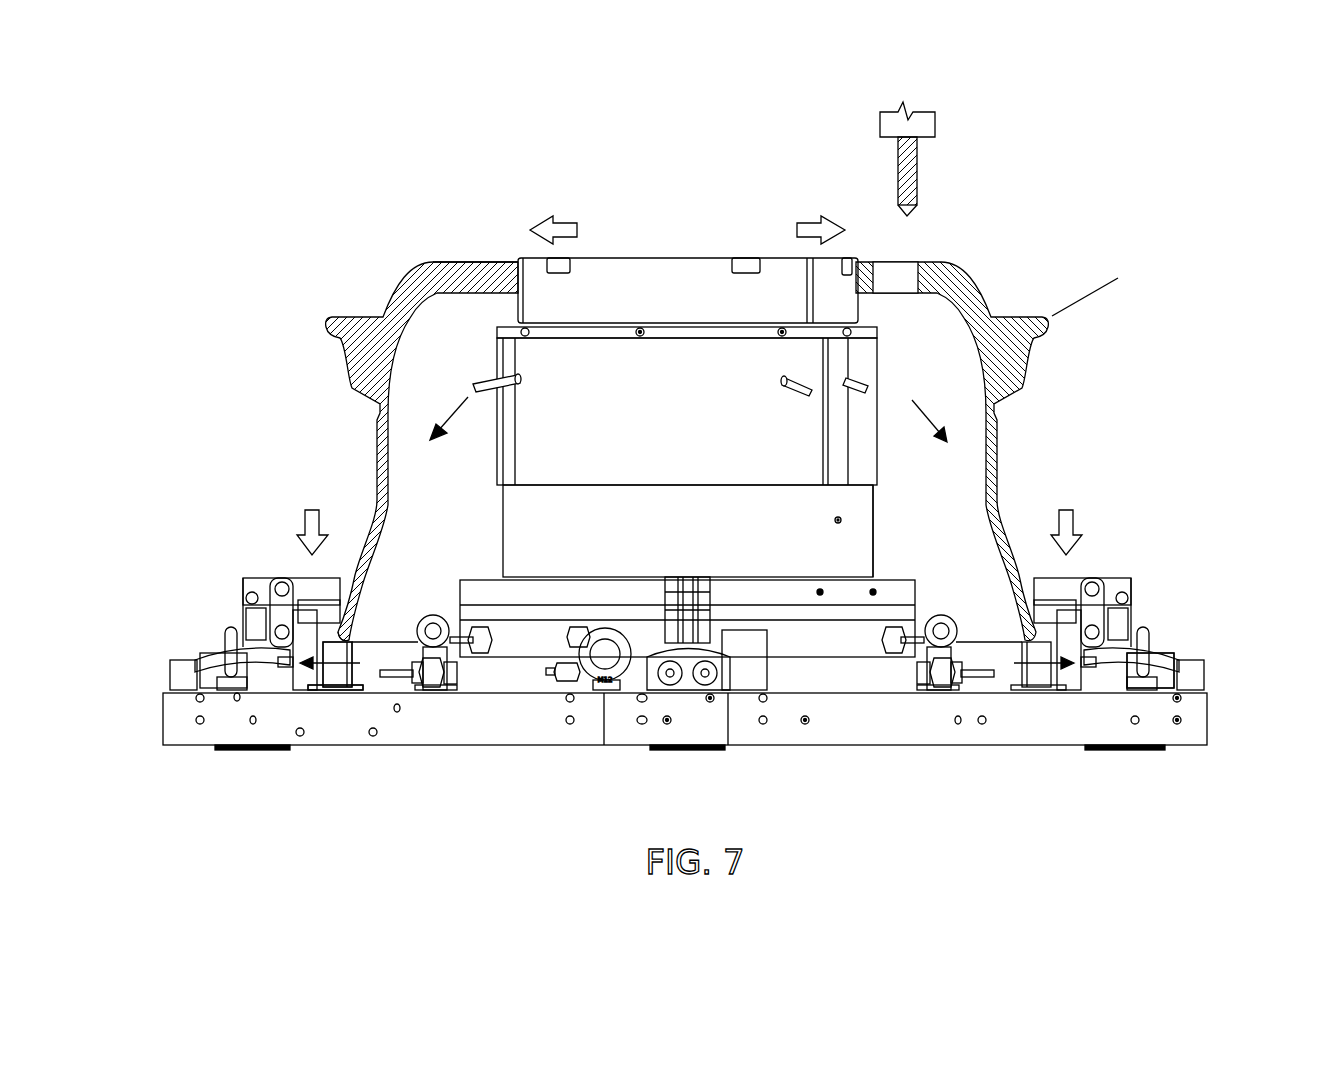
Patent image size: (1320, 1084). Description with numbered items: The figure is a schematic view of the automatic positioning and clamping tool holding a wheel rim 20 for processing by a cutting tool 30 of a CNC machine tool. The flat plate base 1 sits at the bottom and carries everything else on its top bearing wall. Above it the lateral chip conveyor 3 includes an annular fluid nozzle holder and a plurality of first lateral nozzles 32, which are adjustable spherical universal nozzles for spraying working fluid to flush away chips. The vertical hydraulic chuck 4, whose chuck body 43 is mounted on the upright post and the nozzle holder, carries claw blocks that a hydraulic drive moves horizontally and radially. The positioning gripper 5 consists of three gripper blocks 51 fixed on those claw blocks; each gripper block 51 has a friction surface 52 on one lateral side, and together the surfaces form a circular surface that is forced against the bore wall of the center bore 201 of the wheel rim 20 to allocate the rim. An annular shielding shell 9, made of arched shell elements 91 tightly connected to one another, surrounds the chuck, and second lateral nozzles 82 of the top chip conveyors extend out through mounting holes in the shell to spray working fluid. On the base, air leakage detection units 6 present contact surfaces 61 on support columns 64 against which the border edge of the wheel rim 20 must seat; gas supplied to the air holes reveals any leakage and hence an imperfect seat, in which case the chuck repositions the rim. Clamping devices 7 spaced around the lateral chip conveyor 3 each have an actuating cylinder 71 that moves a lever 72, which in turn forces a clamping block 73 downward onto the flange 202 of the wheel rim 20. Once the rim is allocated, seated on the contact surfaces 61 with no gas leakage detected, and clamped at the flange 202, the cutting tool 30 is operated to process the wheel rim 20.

The base 1 is at (847, 750).
The lateral chip conveyor 3 is at (448, 588).
The vertical hydraulic chuck 4 is at (857, 503).
The chuck body 43 is at (882, 521).
The positioning gripper 5 is at (662, 250).
The gripper block 51 is at (713, 270).
The friction surface 52 is at (853, 285).
The air leakage detection unit 6 is at (303, 686).
The contact surface 61 is at (336, 682).
The support column 64 is at (296, 690).
The clamping device 7 is at (238, 576).
The actuating cylinder 71 is at (1163, 682).
The lever 72 is at (252, 583).
The clamping block 73 is at (317, 605).
The annular shielding shell 9 is at (819, 370).
The arched shell element 91 is at (857, 418).
The second lateral nozzle 82 is at (487, 385).
The wheel rim 20 is at (1027, 313).
The center bore 201 is at (493, 264).
The flange 202 is at (330, 623).
The cutting tool 30 is at (926, 183).
The first lateral nozzle 32 is at (393, 677).